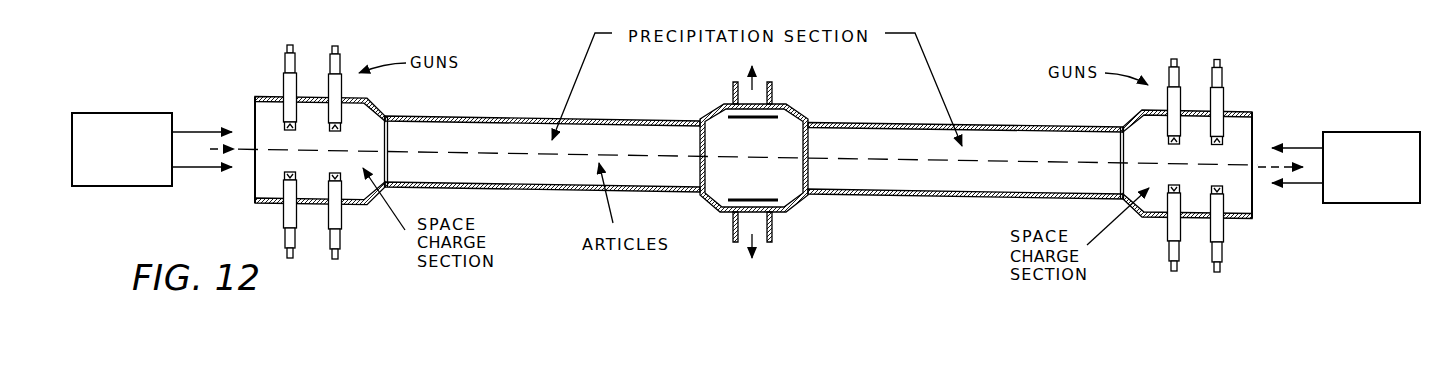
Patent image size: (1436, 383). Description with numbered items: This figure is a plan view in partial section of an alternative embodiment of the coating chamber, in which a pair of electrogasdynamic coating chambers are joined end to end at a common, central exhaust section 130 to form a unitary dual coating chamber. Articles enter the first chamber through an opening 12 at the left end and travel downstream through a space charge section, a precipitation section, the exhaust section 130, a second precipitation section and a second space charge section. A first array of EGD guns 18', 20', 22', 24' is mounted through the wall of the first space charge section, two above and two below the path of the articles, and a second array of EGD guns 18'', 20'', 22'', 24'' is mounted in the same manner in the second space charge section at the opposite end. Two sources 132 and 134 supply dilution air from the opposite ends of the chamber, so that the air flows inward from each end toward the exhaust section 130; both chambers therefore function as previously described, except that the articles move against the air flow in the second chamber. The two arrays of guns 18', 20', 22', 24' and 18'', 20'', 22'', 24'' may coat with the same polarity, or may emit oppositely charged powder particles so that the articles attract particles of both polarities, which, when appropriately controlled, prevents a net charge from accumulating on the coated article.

The opening 12 is at (254, 188).
The EGD gun 18' is at (269, 84).
The EGD gun 20' is at (357, 73).
The EGD gun 22' is at (262, 215).
The EGD gun 24' is at (359, 216).
The EGD gun 18'' is at (1242, 89).
The EGD gun 20'' is at (1154, 88).
The EGD gun 22'' is at (1246, 230).
The EGD gun 24'' is at (1151, 229).
The exhaust section 130 is at (785, 105).
The source of dilution air 132 is at (129, 106).
The source of dilution air 134 is at (1372, 126).